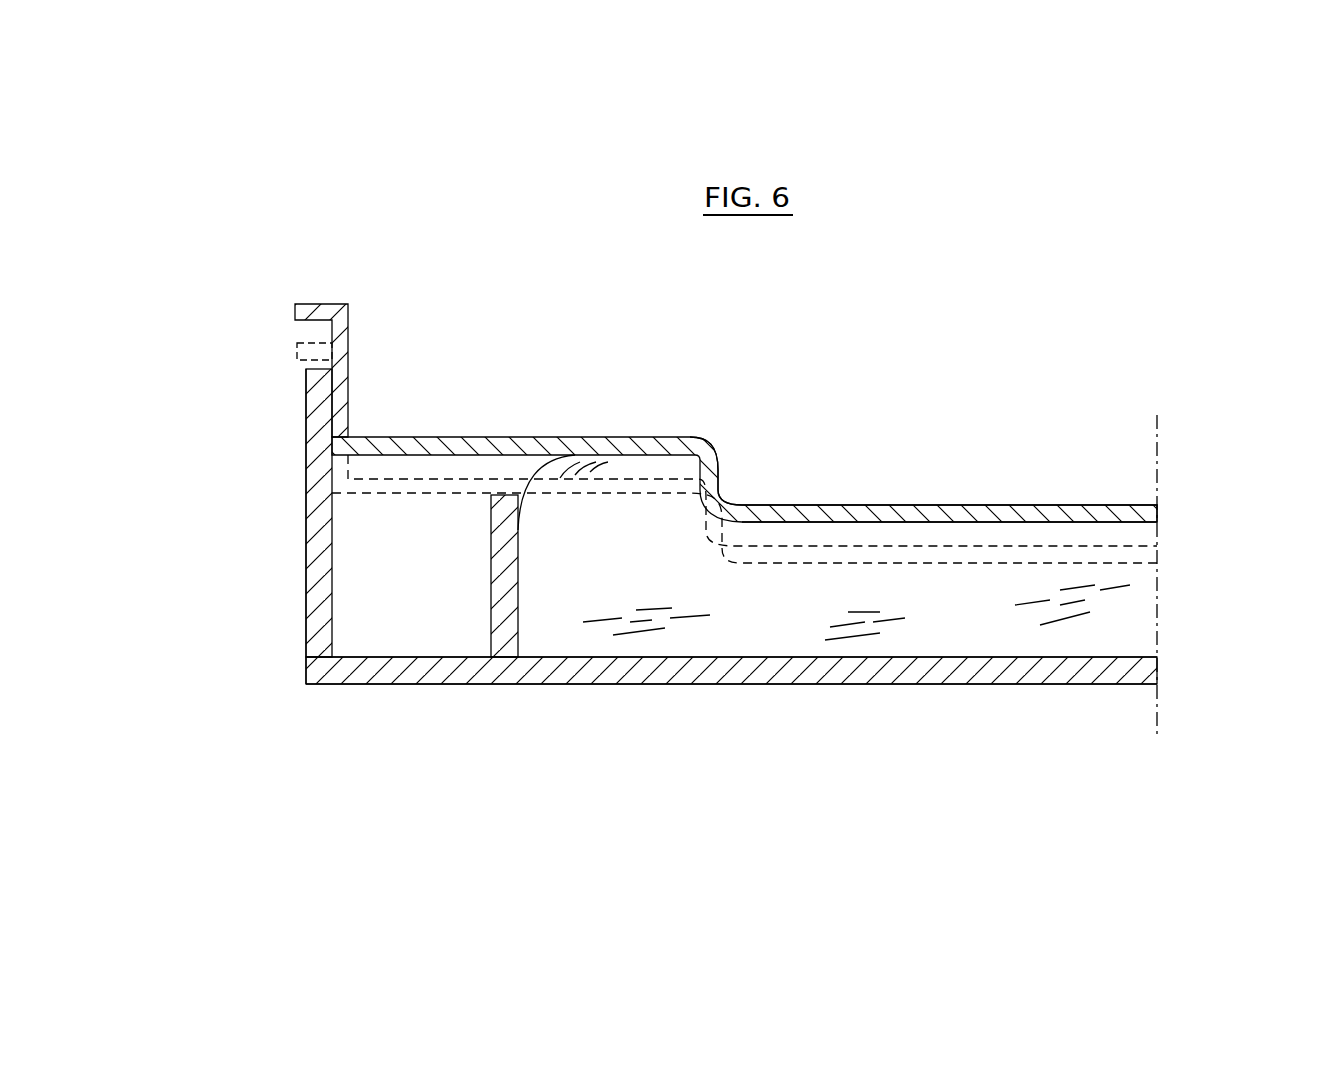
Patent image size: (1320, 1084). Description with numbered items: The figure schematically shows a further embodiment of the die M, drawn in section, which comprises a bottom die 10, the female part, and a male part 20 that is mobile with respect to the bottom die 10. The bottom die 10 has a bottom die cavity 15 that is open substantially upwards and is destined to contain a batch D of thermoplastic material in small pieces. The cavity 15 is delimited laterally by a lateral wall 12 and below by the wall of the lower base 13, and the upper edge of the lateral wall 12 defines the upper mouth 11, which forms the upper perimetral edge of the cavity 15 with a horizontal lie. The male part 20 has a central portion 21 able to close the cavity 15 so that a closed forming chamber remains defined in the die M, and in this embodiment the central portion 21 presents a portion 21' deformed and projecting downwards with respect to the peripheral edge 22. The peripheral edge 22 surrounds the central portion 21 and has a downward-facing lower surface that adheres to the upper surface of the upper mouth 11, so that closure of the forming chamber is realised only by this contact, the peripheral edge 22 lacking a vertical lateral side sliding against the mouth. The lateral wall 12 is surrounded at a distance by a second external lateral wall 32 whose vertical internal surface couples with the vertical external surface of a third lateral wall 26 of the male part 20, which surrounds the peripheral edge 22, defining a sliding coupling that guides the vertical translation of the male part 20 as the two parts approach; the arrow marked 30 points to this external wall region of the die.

The bottom die 10 is at (895, 684).
The upper mouth 11 is at (504, 495).
The lateral wall 12 is at (503, 541).
The lower base 13 is at (700, 684).
The bottom die cavity 15 is at (1133, 627).
The male part 20 is at (722, 443).
The central portion 21 is at (698, 403).
The deformed portion 21' is at (949, 445).
The peripheral edge 22 is at (445, 437).
The third lateral wall 26 is at (352, 328).
The mould wall 30 is at (306, 590).
The second external lateral wall 32 is at (320, 432).
The batch of thermoplastic material D is at (862, 612).
The die M is at (306, 668).